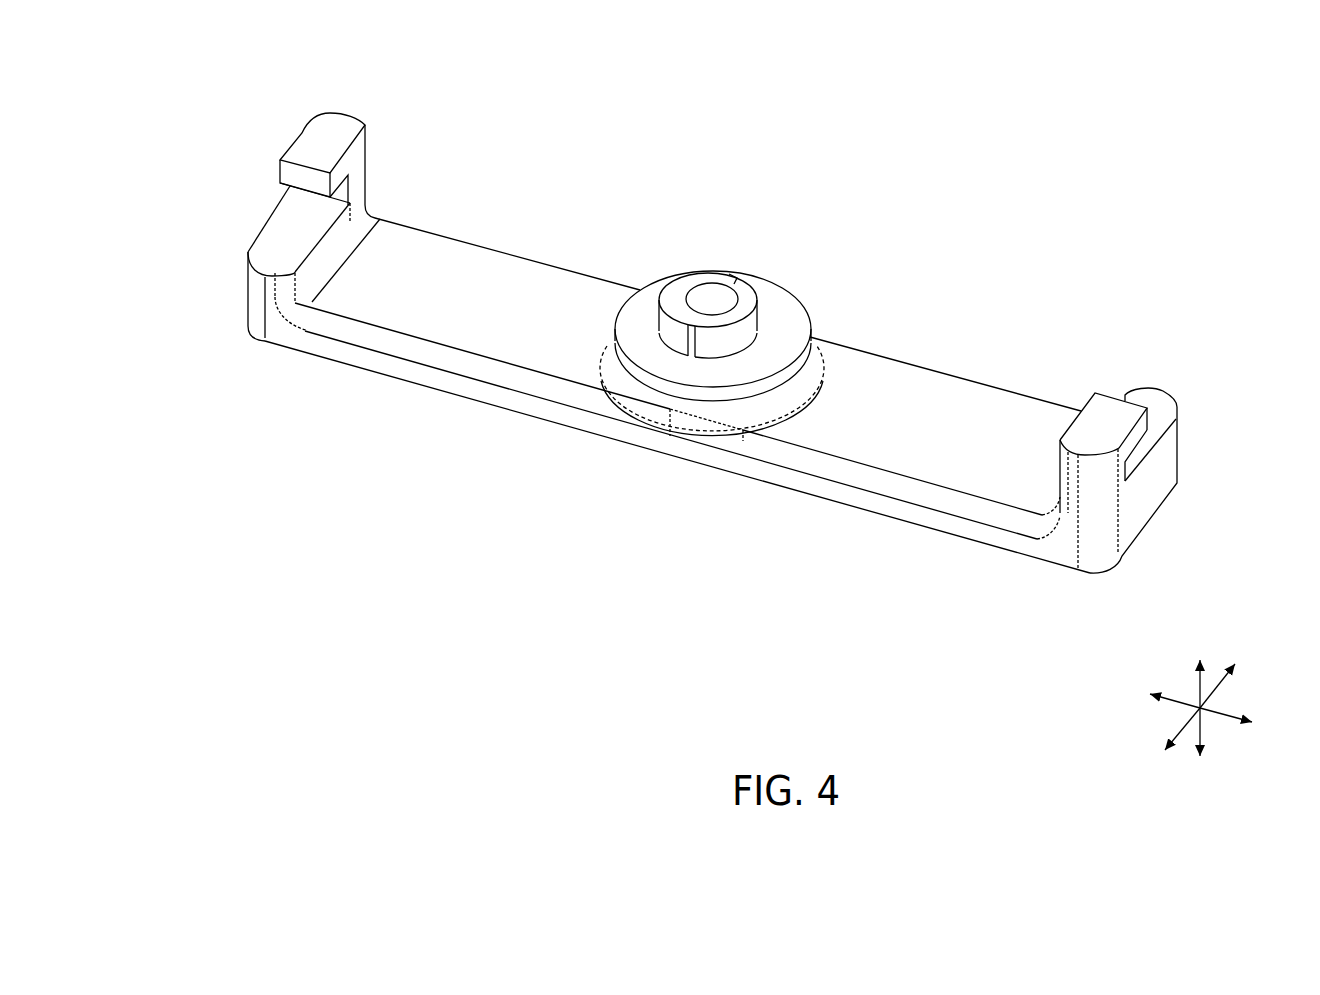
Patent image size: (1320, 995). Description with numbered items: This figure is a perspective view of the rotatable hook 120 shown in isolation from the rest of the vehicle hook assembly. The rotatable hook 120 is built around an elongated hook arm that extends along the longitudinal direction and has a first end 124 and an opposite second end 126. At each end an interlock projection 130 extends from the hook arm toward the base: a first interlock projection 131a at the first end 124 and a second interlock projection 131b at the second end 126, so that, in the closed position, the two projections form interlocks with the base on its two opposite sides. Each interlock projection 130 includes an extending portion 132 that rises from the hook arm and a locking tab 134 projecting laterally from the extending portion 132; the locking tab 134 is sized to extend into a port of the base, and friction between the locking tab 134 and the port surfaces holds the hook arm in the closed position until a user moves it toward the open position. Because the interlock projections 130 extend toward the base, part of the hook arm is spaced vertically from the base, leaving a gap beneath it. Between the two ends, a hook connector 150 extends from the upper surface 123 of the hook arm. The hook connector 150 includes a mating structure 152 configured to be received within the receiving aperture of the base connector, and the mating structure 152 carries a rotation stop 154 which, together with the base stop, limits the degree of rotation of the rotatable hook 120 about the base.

The rotatable hook 120 is at (698, 400).
The upper surface 123 is at (514, 256).
The first end 124 is at (1175, 505).
The second end 126 is at (609, 372).
The interlock projection 130 is at (736, 290).
The first interlock projection 131a is at (1058, 479).
The second interlock projection 131b is at (368, 152).
The extending portion 132 is at (350, 184).
The locking tab 134 is at (288, 143).
The hook connector 150 is at (729, 311).
The mating structure 152 is at (736, 334).
The rotation stop 154 is at (690, 275).